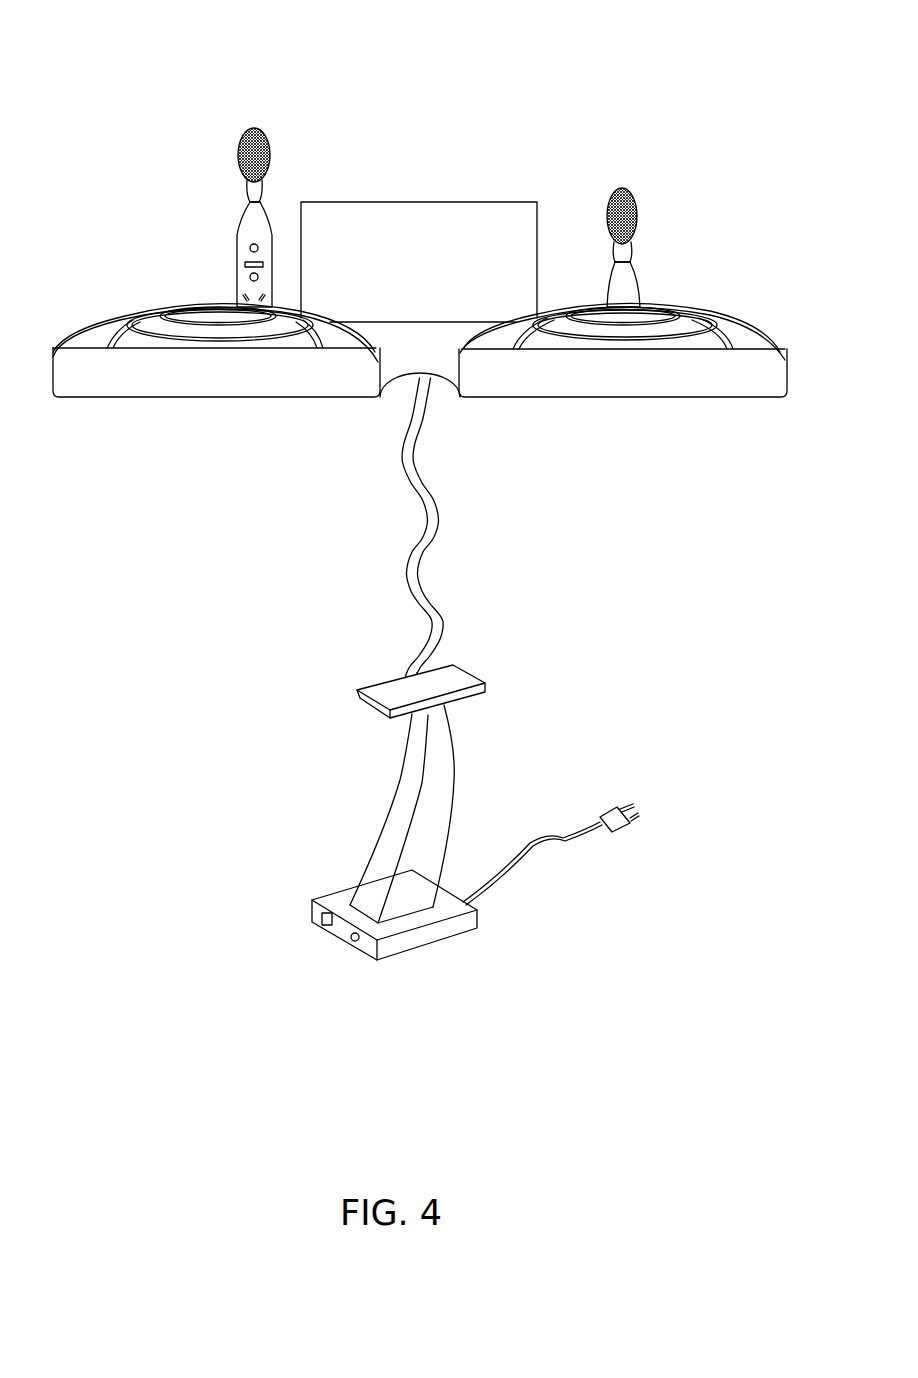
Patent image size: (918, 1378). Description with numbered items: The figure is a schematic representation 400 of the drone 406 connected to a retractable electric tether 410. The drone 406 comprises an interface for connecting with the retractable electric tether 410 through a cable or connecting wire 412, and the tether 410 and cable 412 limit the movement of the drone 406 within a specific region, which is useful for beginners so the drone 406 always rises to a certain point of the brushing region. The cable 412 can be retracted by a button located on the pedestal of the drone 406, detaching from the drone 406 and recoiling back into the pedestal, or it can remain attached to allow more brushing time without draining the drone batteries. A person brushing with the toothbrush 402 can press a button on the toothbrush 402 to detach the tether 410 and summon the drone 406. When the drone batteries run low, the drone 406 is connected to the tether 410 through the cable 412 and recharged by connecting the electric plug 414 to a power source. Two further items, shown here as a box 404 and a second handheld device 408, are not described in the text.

The schematic representation 400 is at (607, 77).
The toothbrush 402 is at (252, 207).
The display/speaker box 404 is at (475, 212).
The drone 406 is at (117, 396).
The second microphone 408 is at (630, 252).
The retractable electric tether 410 is at (408, 771).
The cable 412 is at (403, 468).
The electric plug 414 is at (612, 808).